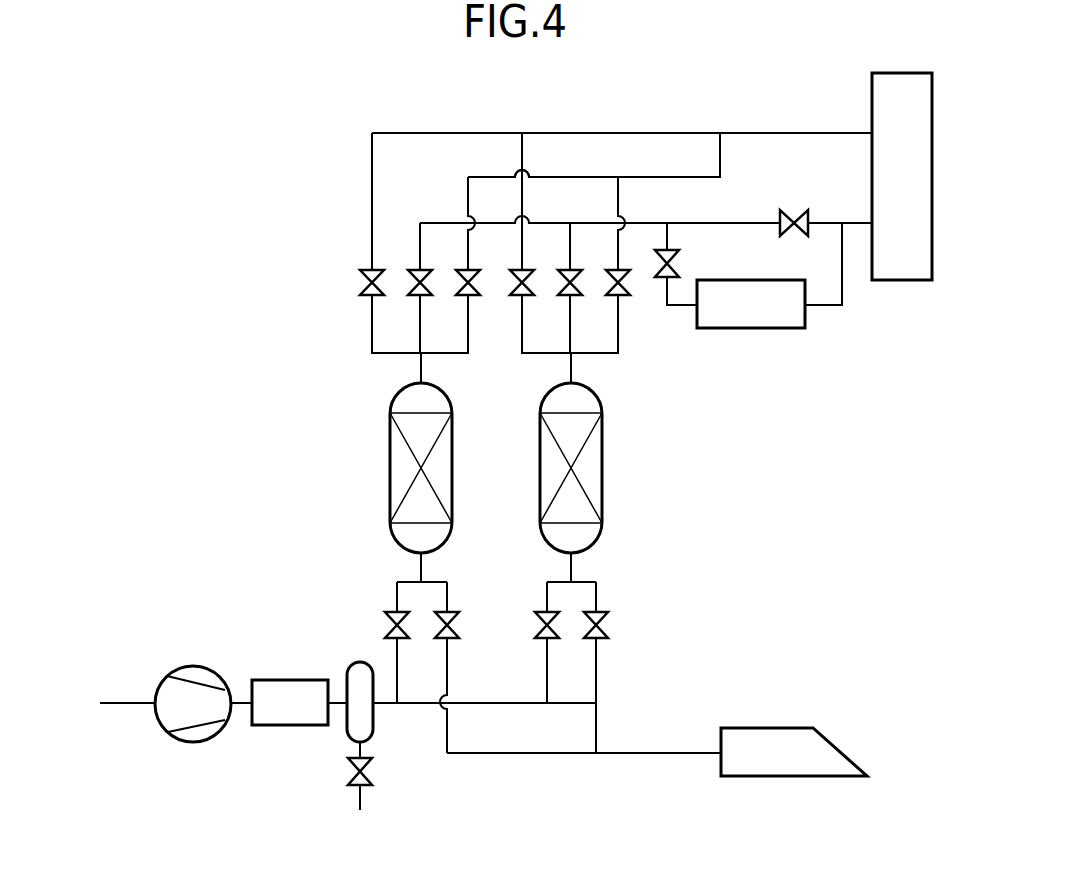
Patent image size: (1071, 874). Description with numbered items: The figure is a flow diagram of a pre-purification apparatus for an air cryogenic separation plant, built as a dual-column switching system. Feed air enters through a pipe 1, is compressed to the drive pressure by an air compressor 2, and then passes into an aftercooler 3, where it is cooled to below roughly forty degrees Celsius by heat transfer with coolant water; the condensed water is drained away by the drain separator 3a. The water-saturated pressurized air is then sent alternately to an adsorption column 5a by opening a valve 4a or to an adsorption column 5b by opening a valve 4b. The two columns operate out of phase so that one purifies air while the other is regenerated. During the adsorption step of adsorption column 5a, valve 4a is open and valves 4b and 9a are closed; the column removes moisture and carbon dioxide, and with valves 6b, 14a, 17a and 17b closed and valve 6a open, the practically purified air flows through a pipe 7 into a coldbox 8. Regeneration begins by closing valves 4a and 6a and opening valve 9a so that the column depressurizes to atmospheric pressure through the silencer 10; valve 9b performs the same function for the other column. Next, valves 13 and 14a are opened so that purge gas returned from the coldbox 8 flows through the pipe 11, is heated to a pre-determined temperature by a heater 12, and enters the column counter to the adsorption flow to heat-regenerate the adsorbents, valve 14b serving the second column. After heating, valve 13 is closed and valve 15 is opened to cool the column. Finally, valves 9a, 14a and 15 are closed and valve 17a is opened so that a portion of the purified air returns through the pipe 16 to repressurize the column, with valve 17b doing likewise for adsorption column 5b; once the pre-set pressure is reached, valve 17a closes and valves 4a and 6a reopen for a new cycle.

The pipe 1 is at (121, 705).
The air compressor 2 is at (203, 742).
The aftercooler 3 is at (288, 726).
The drain separator 3a is at (375, 732).
The valve 4a is at (386, 624).
The valve 4b is at (537, 632).
The adsorption column 5a is at (453, 490).
The adsorption column 5b is at (604, 490).
The valve 6a is at (368, 294).
The valve 6b is at (518, 294).
The pipe 7 is at (812, 132).
The coldbox 8 is at (916, 282).
The valve 9a is at (460, 622).
The valve 9b is at (602, 632).
The silencer 10 is at (789, 777).
The pipe 11 is at (837, 306).
The heater 12 is at (778, 328).
The valve 13 is at (674, 268).
The valve 14a is at (416, 294).
The valve 14b is at (566, 294).
The valve 15 is at (781, 214).
The pipe 16 is at (720, 160).
The valve 17a is at (464, 294).
The valve 17b is at (614, 294).